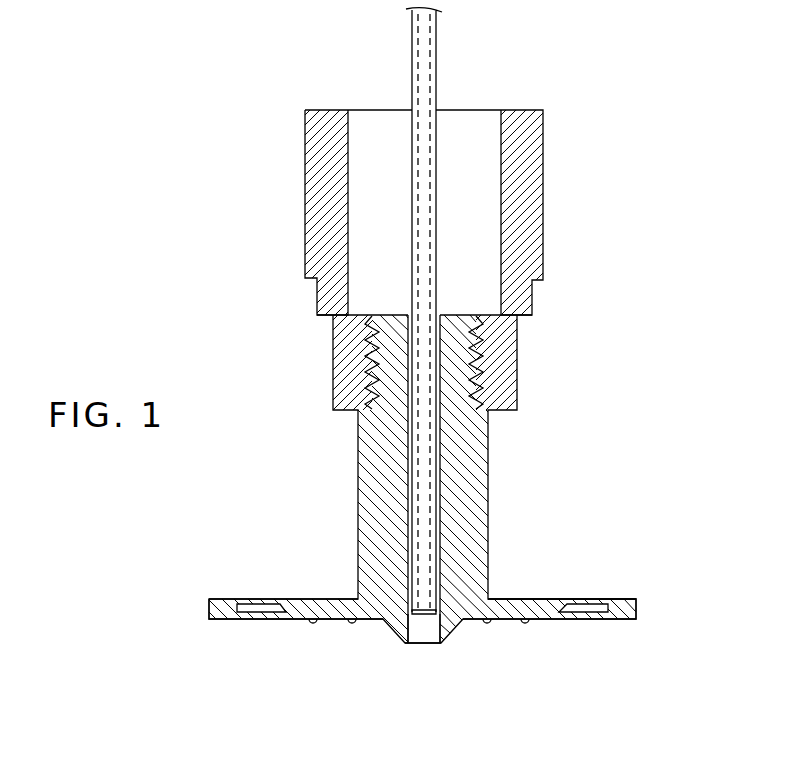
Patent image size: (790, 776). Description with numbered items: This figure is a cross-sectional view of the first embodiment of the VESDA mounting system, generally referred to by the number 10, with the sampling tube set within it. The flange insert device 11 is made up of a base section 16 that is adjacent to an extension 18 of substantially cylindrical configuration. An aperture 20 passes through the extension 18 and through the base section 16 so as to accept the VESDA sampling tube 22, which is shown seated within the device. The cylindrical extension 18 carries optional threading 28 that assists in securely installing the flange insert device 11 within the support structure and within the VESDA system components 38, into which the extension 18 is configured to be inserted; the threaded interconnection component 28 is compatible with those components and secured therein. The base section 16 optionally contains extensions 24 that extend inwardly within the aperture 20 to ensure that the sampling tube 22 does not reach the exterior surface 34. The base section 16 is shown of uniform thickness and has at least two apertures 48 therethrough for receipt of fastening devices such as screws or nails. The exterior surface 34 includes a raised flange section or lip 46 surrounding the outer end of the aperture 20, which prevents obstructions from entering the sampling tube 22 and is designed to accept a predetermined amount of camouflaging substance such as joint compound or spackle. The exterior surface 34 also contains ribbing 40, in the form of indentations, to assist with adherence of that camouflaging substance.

The flange insert device (first embodiment) 10 is at (265, 234).
The flange insert device 11 is at (498, 490).
The base section 16 is at (637, 612).
The extension 18 is at (362, 483).
The aperture 20 is at (413, 628).
The VESDA sampling tube 22 is at (423, 43).
The extensions 24 is at (432, 625).
The threading 28 is at (480, 350).
The exterior surface 34 is at (300, 619).
The VESDA system components 38 is at (548, 294).
The ribbing 40 is at (490, 623).
The raised flange section or lip 46 is at (530, 599).
The apertures 48 is at (575, 612).